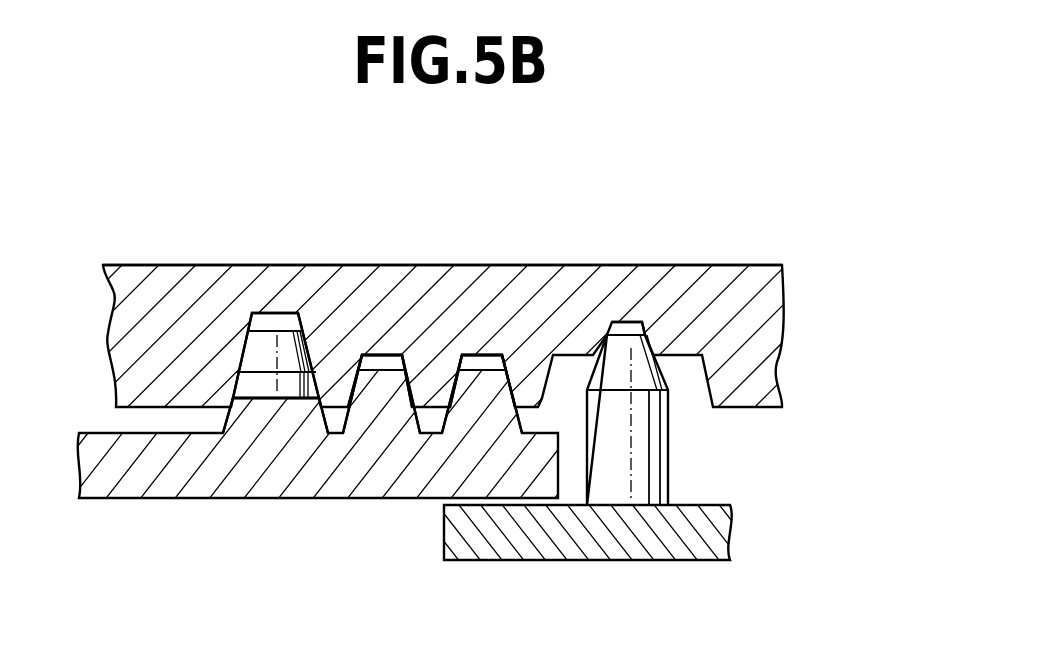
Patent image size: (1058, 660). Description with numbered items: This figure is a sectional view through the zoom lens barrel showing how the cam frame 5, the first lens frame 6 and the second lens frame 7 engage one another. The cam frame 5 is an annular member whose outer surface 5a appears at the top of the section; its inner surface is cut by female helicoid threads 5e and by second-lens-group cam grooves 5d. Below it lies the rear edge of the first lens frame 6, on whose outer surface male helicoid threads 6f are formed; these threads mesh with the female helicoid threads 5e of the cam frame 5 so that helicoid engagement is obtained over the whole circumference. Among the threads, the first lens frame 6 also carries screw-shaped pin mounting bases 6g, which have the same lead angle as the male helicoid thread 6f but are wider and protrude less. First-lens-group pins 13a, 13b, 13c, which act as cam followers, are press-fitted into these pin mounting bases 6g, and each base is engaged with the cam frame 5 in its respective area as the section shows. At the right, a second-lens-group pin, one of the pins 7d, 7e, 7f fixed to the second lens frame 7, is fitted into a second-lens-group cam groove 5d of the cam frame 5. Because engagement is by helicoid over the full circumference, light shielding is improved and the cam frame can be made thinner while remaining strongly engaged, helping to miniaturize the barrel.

The cam frame 5 is at (417, 261).
The outer surface 5a is at (150, 265).
The second-lens-group cam groove 5d is at (630, 328).
The female helicoid thread 5e is at (433, 365).
The first lens frame 6 is at (190, 500).
The male helicoid thread 6f is at (412, 437).
The pin mounting base 6g is at (270, 413).
The second lens frame 7 is at (685, 528).
The second-lens-group pin 7d is at (738, 447).
The second-lens-group pin 7e is at (738, 447).
The second-lens-group pin 7f is at (642, 462).
The first-lens-group pin 13a is at (284, 299).
The first-lens-group pin 13b is at (284, 299).
The first-lens-group pin 13c is at (267, 348).